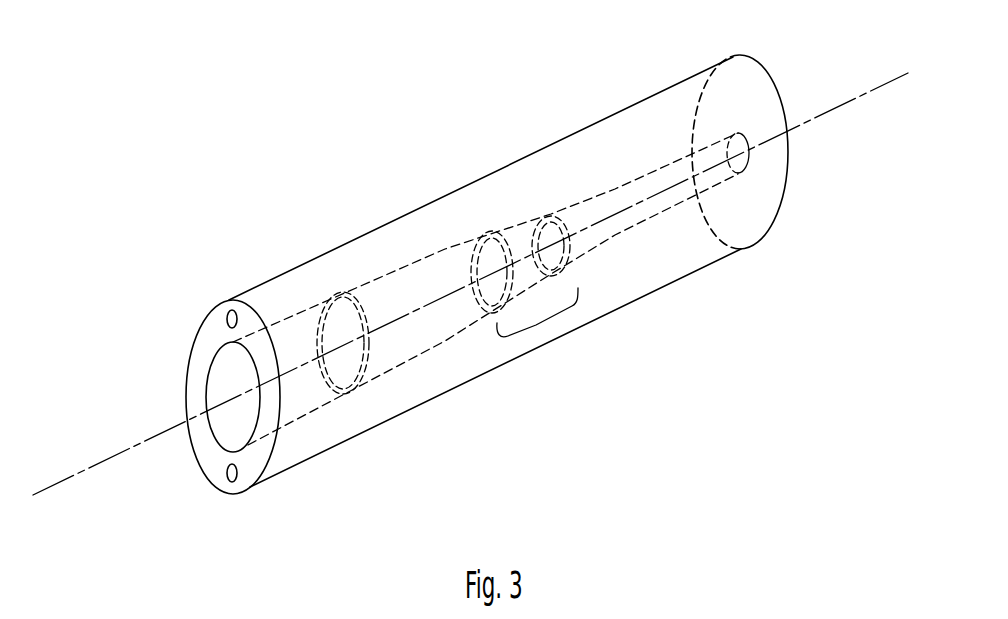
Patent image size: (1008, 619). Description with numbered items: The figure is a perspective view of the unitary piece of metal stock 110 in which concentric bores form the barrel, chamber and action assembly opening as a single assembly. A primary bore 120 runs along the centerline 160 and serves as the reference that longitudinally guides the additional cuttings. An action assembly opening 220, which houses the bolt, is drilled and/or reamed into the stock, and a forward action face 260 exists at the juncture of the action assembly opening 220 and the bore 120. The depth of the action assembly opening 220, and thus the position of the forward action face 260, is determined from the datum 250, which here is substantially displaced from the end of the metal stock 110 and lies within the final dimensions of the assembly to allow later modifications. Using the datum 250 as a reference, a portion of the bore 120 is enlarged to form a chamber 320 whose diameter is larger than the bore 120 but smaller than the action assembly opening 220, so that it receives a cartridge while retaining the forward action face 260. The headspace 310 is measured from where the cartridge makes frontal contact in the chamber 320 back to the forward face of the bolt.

The metal stock 110 is at (511, 163).
The primary bore 120 is at (641, 188).
The centerline 160 is at (883, 84).
The action assembly opening 220 is at (385, 295).
The datum 250 is at (318, 330).
The forward action face 260 is at (477, 261).
The headspace 310 is at (538, 323).
The chamber 320 is at (537, 227).